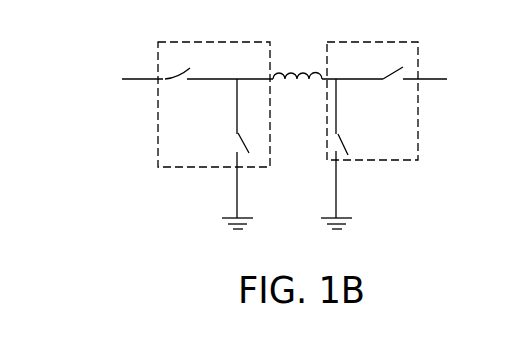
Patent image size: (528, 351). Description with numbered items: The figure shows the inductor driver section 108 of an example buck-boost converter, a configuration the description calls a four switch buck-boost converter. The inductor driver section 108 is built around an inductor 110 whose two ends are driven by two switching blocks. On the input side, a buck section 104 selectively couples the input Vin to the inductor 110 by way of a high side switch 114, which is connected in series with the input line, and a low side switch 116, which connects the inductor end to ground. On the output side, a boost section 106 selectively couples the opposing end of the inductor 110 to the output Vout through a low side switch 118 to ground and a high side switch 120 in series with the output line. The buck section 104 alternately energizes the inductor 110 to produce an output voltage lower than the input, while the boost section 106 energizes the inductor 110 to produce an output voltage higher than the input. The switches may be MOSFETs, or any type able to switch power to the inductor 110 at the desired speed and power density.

The buck section 104 is at (209, 41).
The boost section 106 is at (390, 41).
The inductor driver section 108 is at (306, 24).
The inductor 110 is at (320, 80).
The high side switch 114 is at (191, 68).
The low side switch 116 is at (242, 139).
The low side switch 118 is at (339, 136).
The high side switch 120 is at (396, 70).